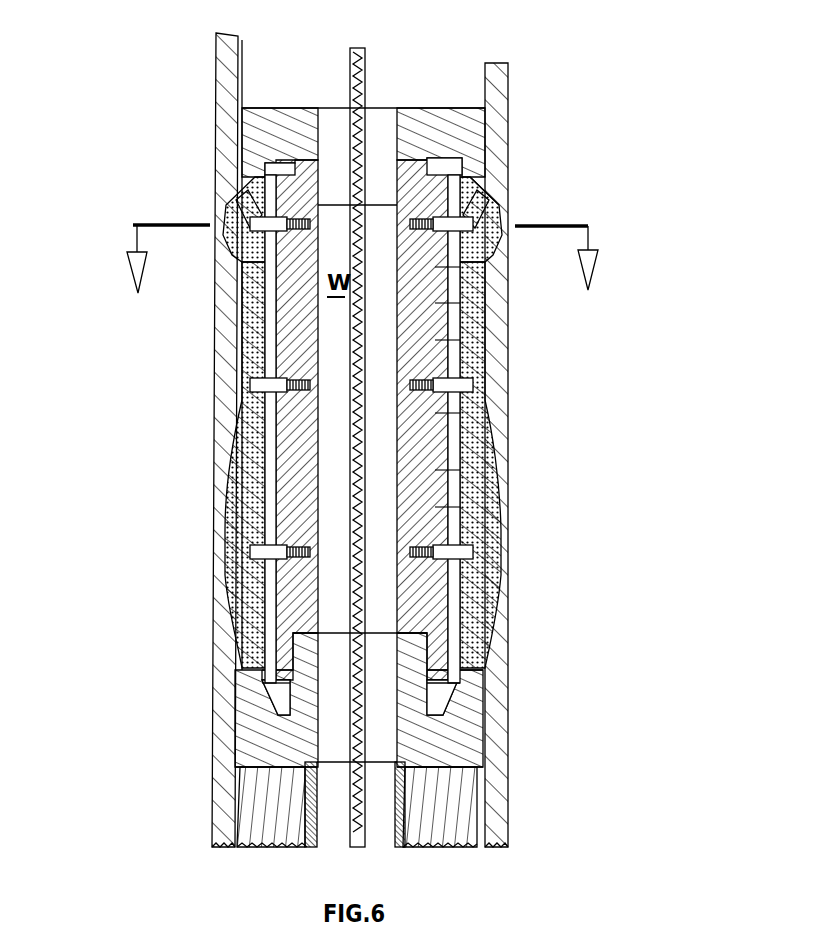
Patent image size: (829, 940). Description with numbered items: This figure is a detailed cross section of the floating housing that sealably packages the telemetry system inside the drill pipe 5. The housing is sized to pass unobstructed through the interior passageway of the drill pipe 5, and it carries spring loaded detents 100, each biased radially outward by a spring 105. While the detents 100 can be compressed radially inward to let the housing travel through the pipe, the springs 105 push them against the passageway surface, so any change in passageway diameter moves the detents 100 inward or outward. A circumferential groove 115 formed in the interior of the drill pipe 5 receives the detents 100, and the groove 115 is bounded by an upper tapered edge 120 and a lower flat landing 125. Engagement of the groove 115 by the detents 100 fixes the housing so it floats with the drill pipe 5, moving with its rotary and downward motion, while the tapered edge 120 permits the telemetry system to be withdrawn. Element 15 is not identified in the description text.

The drill pipe 5 is at (514, 113).
The annular flow passage 15 is at (346, 156).
The spring loaded detent 100 is at (225, 573).
The spring 105 is at (247, 333).
The circumferential groove 115 is at (225, 215).
The upper tapered edge 120 is at (505, 198).
The lower flat landing 125 is at (498, 240).